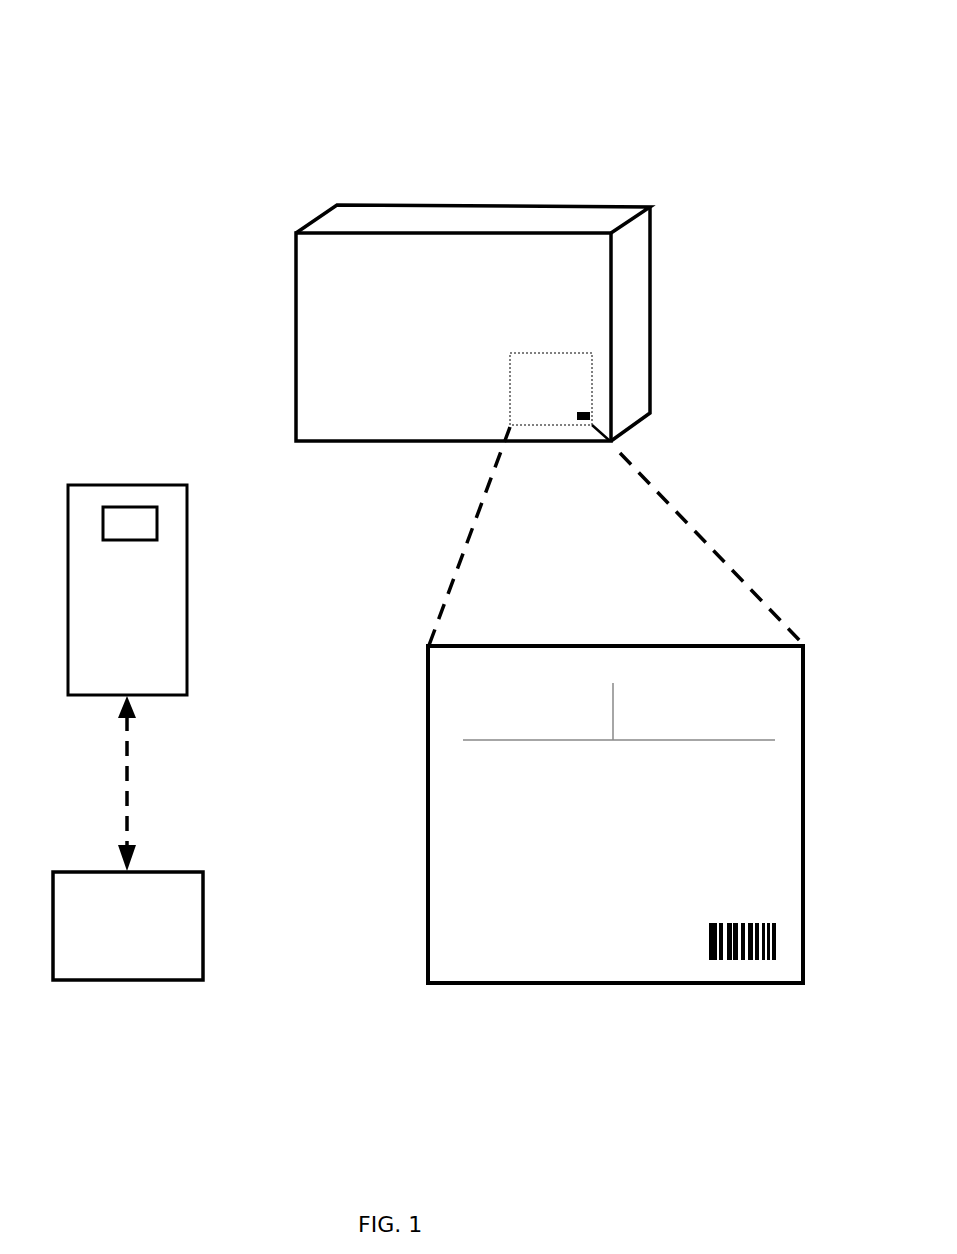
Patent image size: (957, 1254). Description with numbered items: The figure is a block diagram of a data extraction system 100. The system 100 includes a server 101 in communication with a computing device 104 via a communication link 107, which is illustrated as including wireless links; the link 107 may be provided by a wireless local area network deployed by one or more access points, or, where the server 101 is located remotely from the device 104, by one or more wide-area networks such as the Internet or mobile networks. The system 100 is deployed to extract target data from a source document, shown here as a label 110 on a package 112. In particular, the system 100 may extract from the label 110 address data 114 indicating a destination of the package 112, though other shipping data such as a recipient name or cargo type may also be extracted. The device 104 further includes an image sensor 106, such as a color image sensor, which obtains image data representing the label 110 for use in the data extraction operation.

The data extraction system 100 is at (238, 86).
The server 101 is at (109, 924).
The computing device 104 is at (109, 602).
The image sensor 106 is at (132, 507).
The communication link 107 is at (153, 783).
The label 110 is at (595, 395).
The package 112 is at (650, 227).
The address data 114 is at (732, 799).